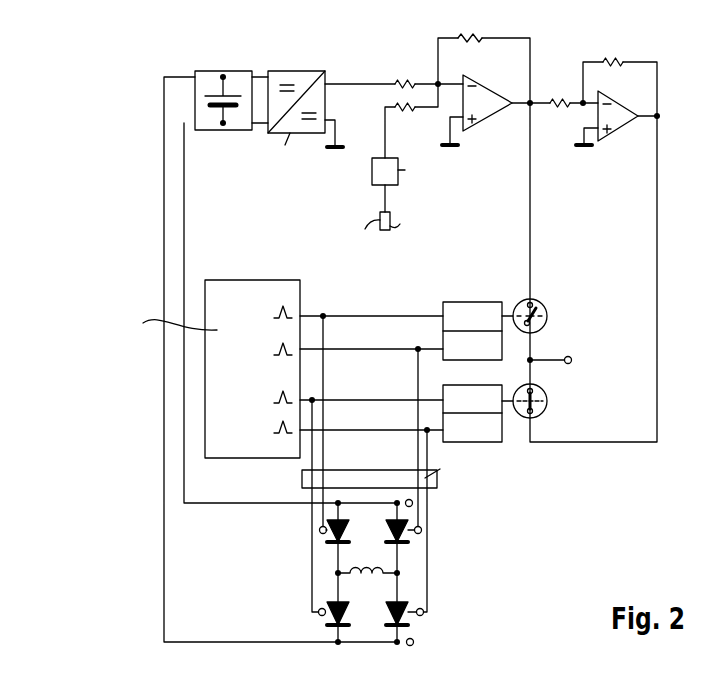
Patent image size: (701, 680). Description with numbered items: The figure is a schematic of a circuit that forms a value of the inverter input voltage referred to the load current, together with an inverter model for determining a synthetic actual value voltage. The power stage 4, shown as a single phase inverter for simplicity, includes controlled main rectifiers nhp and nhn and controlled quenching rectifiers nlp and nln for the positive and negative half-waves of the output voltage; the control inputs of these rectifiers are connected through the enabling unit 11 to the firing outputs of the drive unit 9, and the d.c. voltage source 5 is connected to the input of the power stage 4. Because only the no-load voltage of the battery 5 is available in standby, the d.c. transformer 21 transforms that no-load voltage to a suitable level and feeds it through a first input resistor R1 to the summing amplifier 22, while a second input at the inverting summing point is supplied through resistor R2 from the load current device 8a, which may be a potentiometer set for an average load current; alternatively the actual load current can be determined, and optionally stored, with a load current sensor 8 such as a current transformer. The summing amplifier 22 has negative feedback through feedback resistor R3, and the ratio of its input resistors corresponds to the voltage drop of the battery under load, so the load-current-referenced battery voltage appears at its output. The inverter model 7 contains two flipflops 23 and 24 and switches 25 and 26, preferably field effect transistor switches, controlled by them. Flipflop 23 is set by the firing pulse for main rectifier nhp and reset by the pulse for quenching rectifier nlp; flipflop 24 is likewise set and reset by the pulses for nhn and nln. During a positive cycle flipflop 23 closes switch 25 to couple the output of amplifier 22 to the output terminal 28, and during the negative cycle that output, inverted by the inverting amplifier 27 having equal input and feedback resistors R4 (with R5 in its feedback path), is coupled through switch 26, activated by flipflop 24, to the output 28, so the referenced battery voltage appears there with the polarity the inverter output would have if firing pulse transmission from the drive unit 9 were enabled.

The d.c. voltage source 5 is at (223, 71).
The d.c. transformer 21 is at (296, 71).
The first input resistor R1 is at (415, 78).
The resistor R2 is at (419, 112).
The feedback resistor R3 is at (484, 32).
The input and feedback resistors R4 is at (574, 97).
The resistor R5 is at (622, 52).
The summing amplifier 22 is at (492, 120).
The inverting amplifier 27 is at (624, 125).
The load current device 8a is at (432, 194).
The load current sensor 8 is at (378, 220).
The drive unit 9 is at (224, 381).
The flipflop 23 is at (471, 302).
The flipflop 24 is at (472, 442).
The switch 25 is at (544, 305).
The switch 26 is at (548, 401).
The output terminal 28 is at (587, 360).
The enabling unit 11 is at (371, 476).
The inverter model 7 is at (543, 490).
The power stage 4 is at (359, 621).
The controlled main rectifier nhp is at (326, 539).
The controlled quenching rectifier nlp is at (409, 539).
The controlled main rectifier nhn is at (327, 606).
The controlled quenching rectifier nln is at (411, 606).